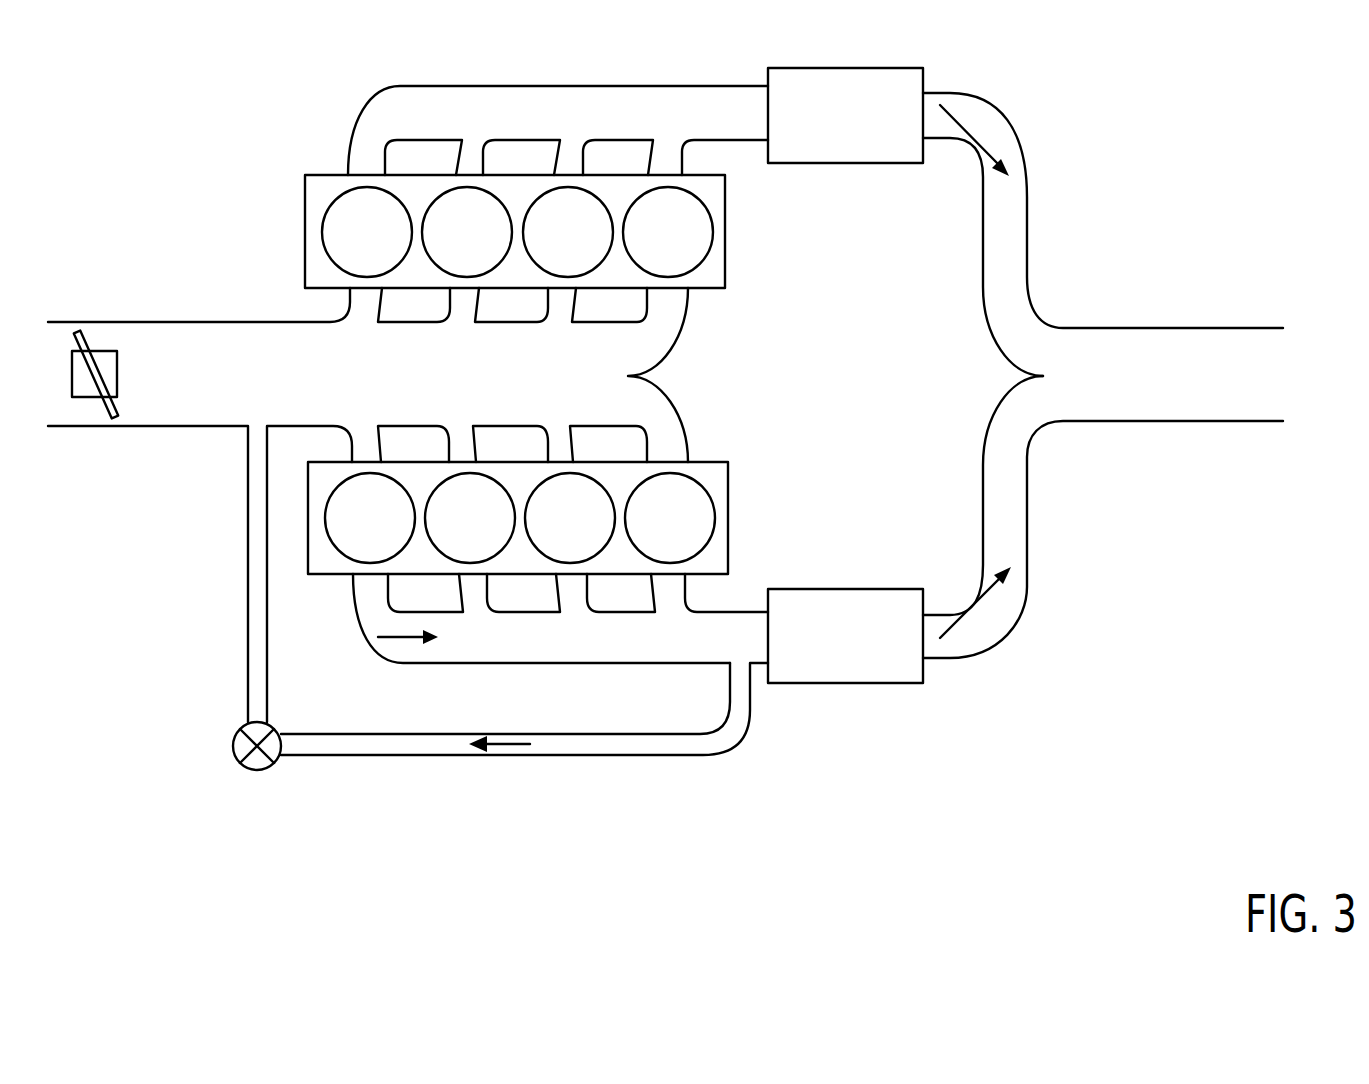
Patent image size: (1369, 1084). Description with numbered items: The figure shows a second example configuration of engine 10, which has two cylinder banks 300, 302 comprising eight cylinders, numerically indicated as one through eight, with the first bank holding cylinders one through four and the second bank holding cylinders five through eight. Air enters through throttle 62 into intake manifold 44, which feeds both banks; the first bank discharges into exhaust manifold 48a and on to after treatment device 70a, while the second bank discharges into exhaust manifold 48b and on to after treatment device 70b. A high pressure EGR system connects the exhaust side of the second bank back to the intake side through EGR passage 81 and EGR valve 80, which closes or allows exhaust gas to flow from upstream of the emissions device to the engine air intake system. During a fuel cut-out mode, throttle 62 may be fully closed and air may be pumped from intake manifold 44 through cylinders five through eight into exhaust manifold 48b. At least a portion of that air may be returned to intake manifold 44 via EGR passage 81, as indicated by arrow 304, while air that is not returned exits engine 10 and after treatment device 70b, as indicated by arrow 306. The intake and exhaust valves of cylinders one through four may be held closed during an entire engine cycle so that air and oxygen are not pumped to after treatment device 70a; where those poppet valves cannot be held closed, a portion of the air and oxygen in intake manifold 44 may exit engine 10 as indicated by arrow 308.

The engine 10 is at (305, 175).
The cylinder bank 300 is at (288, 291).
The cylinder bank 302 is at (328, 590).
The intake manifold 44 is at (478, 378).
The throttle 62 is at (108, 355).
The exhaust manifold 48a is at (562, 121).
The exhaust manifold 48b is at (579, 650).
The after treatment device 70a is at (866, 130).
The after treatment device 70b is at (866, 649).
The EGR valve 80 is at (237, 737).
The EGR passage 81 is at (417, 733).
The arrow 304 is at (504, 751).
The arrow 306 is at (977, 610).
The arrow 308 is at (988, 143).